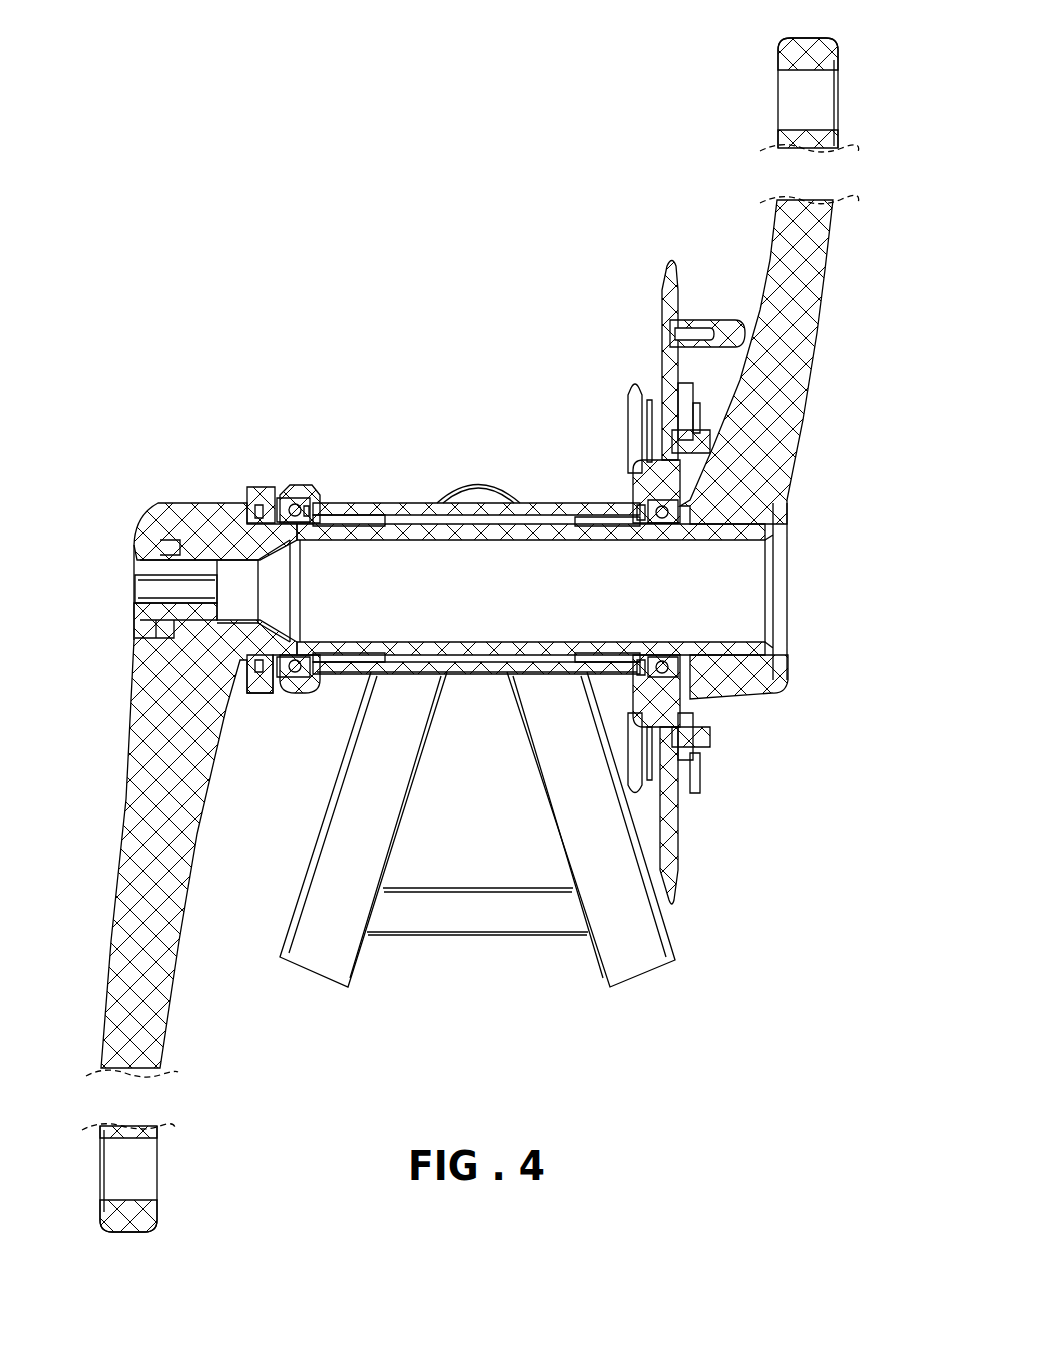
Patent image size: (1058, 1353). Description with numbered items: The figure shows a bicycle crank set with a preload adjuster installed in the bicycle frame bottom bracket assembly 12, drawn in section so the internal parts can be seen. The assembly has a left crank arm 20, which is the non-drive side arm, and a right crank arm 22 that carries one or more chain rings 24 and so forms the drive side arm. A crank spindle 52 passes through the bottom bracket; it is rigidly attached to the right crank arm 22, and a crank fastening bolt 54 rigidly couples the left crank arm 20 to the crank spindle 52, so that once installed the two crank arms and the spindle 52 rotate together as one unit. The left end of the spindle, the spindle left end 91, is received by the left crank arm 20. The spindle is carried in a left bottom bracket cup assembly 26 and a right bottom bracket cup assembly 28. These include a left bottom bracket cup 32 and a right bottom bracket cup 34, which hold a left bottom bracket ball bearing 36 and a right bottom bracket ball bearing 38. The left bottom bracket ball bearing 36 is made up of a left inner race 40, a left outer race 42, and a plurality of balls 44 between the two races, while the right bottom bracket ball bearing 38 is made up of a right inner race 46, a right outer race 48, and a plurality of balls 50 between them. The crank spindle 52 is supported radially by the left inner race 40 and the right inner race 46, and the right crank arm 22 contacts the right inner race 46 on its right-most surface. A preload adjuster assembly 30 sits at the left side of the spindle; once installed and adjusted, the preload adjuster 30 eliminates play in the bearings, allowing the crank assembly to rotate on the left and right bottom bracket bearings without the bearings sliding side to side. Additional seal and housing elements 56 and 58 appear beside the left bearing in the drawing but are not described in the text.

The bicycle frame bottom bracket assembly 12 is at (483, 937).
The left crank arm 20 is at (180, 960).
The right crank arm 22 is at (805, 258).
The chain rings 24 is at (683, 830).
The left bottom bracket cup assembly 26 is at (302, 482).
The right bottom bracket cup assembly 28 is at (657, 478).
The preload adjuster assembly 30 is at (273, 700).
The left bottom bracket cup 32 is at (313, 493).
The right bottom bracket cup 34 is at (653, 497).
The left bottom bracket ball bearing 36 is at (297, 503).
The right bottom bracket ball bearing 38 is at (647, 503).
The left inner race 40 is at (283, 517).
The left outer race 42 is at (290, 510).
The balls 44 is at (283, 515).
The right inner race 46 is at (643, 522).
The right outer race 48 is at (653, 520).
The balls 50 is at (650, 510).
The crank spindle 52 is at (780, 590).
The crank fastening bolt 54 is at (133, 573).
The bearing 56 is at (266, 692).
The seal housing 58 is at (283, 693).
The spindle left end 91 is at (190, 540).